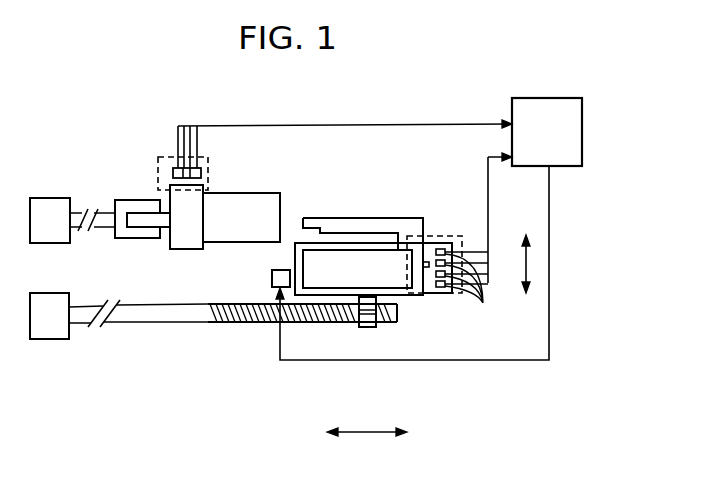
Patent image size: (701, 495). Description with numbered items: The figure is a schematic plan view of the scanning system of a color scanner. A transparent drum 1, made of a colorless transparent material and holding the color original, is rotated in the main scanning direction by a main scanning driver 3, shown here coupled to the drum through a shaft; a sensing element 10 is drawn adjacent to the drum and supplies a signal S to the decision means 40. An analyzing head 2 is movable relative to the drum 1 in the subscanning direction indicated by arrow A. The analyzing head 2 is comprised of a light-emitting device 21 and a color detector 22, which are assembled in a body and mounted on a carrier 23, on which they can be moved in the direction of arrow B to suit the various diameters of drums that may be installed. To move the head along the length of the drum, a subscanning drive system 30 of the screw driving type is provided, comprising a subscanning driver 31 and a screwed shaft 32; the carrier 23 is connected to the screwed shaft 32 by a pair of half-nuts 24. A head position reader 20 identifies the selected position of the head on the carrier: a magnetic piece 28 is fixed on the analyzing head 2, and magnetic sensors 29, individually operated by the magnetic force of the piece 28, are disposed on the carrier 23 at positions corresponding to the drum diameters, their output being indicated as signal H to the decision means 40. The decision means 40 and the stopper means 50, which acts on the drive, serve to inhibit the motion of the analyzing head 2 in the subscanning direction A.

The transparent drum 1 is at (246, 193).
The analyzing head 2 is at (407, 176).
The main scanning driver 3 is at (56, 198).
The sensor head 10 is at (158, 172).
The head position reader 20 is at (454, 261).
The light-emitting device 21 is at (406, 225).
The color detector 22 is at (328, 267).
The carrier 23 is at (404, 296).
The half-nuts 24 is at (363, 327).
The magnetic piece 28 is at (427, 267).
The magnetic sensors 29 is at (473, 296).
The subscanning drive system 30 is at (272, 380).
The subscanning driver 31 is at (148, 358).
The screwed shaft 32 is at (223, 323).
The decision means 40 is at (570, 108).
The stopper means 50 is at (272, 277).
The drum signal S is at (396, 125).
The head signal H is at (488, 224).
The arrow B is at (530, 258).
The arrow A is at (362, 433).